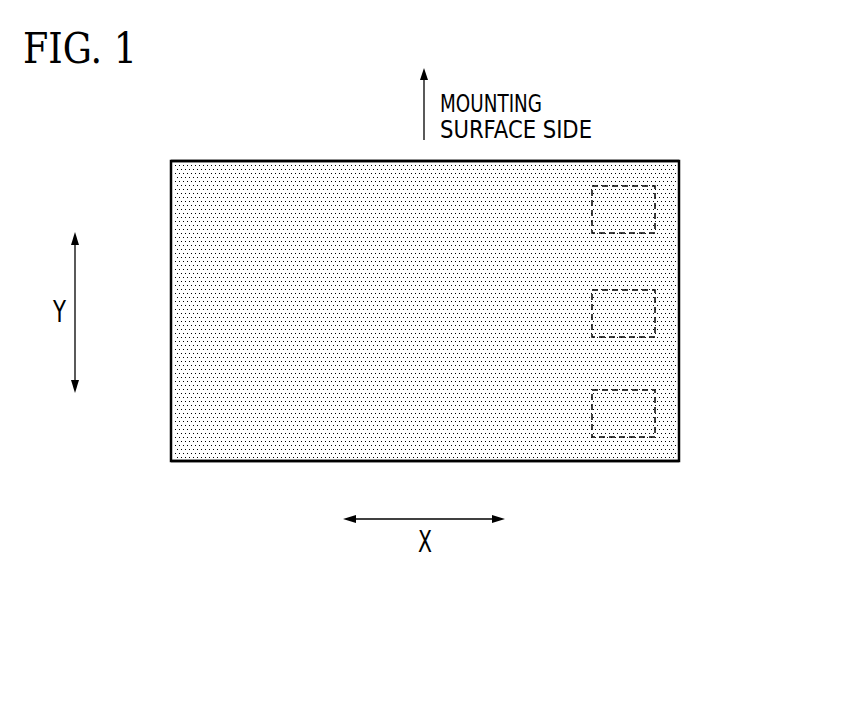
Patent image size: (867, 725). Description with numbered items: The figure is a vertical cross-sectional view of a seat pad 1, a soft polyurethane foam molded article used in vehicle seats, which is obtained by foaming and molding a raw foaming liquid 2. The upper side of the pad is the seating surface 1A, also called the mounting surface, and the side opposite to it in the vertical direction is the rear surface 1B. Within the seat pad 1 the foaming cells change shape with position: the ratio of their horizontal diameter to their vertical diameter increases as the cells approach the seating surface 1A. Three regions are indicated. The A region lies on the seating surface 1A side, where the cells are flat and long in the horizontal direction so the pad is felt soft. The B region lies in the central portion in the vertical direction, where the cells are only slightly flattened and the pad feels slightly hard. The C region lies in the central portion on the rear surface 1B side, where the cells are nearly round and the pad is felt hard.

The seat pad 1 is at (638, 161).
The seating surface 1A is at (251, 150).
The rear surface 1B is at (251, 472).
The raw foaming liquid 2 is at (225, 308).
The A region A is at (662, 207).
The B region B is at (662, 314).
The C region C is at (662, 413).